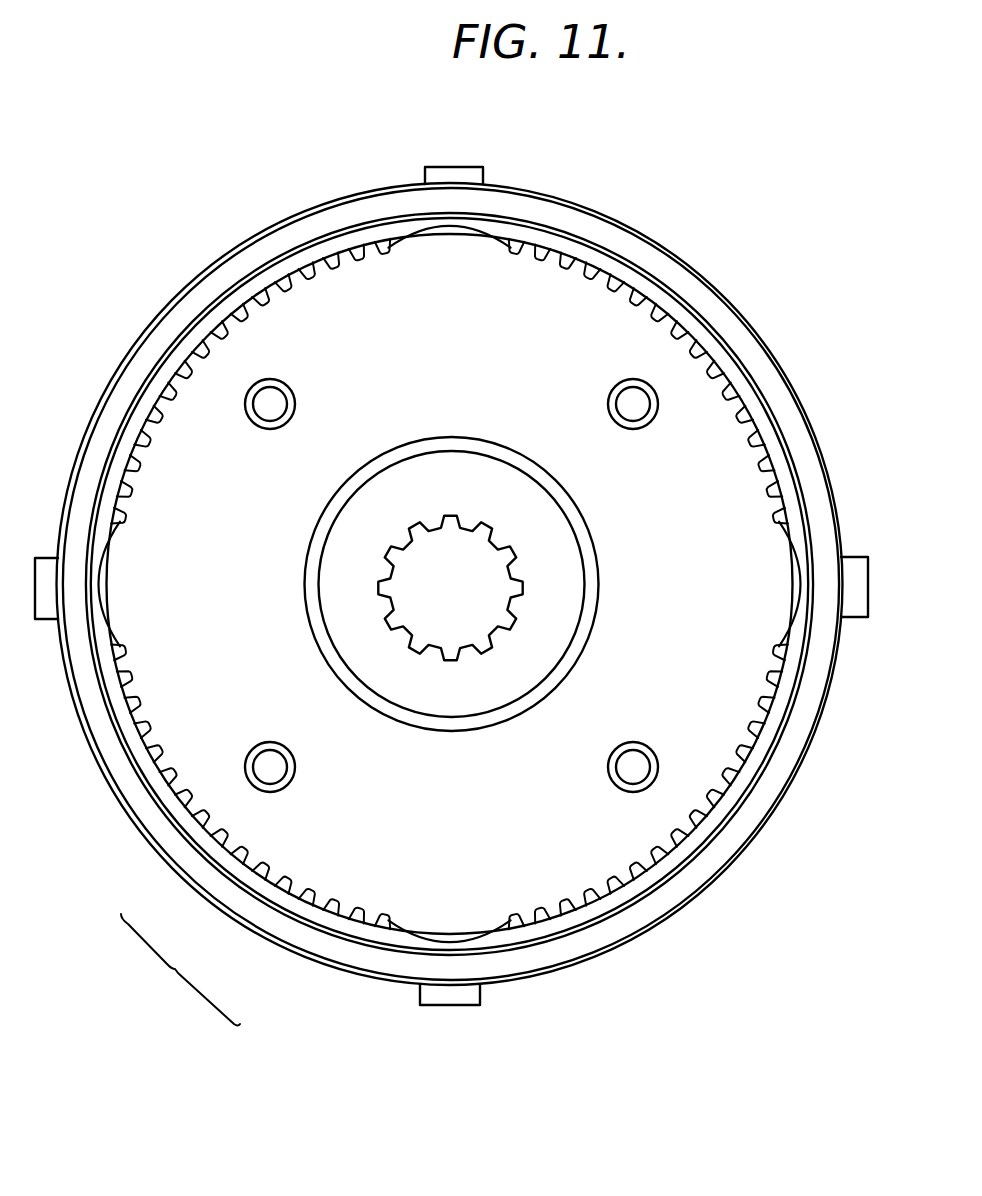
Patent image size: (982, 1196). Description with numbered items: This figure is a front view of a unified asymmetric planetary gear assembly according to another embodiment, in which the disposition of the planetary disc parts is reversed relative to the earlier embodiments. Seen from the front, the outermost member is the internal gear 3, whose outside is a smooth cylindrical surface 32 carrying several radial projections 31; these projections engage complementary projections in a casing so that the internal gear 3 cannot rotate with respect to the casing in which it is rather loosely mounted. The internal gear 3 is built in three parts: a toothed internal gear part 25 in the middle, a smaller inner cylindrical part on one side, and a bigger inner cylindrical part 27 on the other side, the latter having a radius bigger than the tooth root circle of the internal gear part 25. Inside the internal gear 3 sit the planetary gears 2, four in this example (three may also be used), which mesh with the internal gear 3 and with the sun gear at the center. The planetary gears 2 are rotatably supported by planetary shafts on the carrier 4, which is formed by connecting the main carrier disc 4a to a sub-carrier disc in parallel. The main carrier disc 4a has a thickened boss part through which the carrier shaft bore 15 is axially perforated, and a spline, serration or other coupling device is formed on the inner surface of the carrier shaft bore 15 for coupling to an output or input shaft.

The planetary gears 2 is at (98, 557).
The internal gear 3 is at (180, 970).
The carrier 4 is at (690, 770).
The main carrier disc 4a is at (527, 905).
The carrier shaft bore 15 is at (462, 652).
The internal gear part 25 is at (225, 872).
The bigger inner cylindrical part 27 is at (285, 910).
The radial projections 31 is at (455, 166).
The smooth cylindrical surface 32 is at (625, 222).